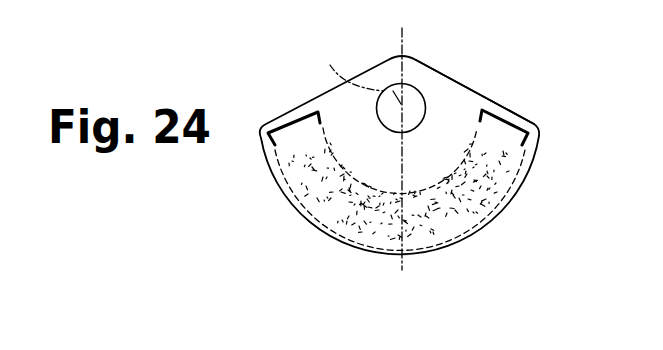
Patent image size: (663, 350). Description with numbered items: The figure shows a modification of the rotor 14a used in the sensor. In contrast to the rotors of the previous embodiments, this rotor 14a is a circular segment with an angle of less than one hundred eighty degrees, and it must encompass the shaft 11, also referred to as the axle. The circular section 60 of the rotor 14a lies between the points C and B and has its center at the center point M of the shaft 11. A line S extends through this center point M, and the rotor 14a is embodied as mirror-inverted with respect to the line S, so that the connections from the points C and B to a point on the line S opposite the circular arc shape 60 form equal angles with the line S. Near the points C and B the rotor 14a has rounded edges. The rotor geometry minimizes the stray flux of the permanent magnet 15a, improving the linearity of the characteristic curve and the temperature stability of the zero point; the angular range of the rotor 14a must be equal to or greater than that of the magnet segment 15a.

The circular section 60 is at (322, 234).
The shaft 11 is at (422, 100).
The rotor 14a is at (455, 107).
The permanent magnet 15a is at (453, 210).
The point C is at (273, 128).
The point B is at (520, 127).
The line S is at (400, 37).
The center point M is at (350, 65).